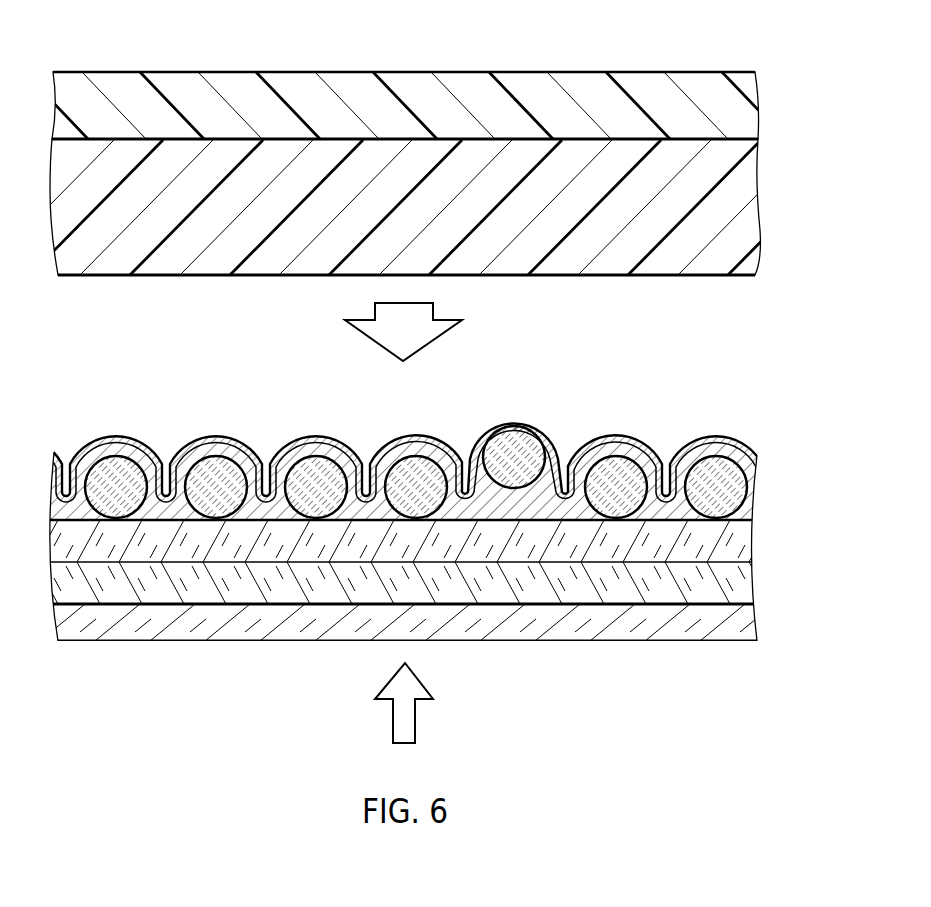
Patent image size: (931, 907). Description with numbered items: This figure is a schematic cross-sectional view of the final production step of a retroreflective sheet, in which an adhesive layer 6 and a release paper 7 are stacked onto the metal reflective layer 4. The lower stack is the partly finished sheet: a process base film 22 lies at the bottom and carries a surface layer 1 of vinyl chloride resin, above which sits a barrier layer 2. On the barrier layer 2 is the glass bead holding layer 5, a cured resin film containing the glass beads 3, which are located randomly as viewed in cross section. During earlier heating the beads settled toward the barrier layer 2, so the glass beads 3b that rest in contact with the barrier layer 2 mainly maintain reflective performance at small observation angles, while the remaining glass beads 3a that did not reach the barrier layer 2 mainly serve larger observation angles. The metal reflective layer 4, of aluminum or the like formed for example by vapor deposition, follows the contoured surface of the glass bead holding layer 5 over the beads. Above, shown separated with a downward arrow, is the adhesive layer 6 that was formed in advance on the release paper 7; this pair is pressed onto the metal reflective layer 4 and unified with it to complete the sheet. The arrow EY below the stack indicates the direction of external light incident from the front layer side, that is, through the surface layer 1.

The surface layer 1 is at (728, 587).
The barrier layer 2 is at (728, 542).
The process base film 22 is at (735, 620).
The glass beads 3 is at (250, 359).
The glass beads not in contact with the barrier layer 3a is at (288, 438).
The glass beads in contact with the barrier layer 3b is at (127, 469).
The metal reflective layer 4 is at (735, 447).
The glass bead holding layer 5 is at (750, 508).
The adhesive layer 6 is at (724, 203).
The release paper 7 is at (724, 105).
The arrow indicating direction of external light EY is at (415, 718).